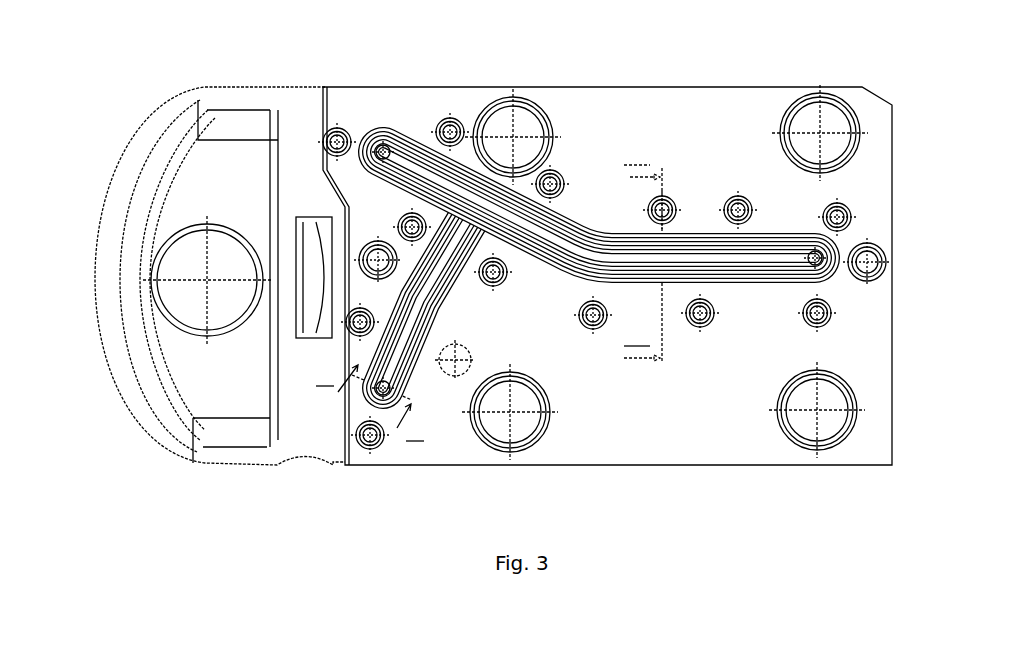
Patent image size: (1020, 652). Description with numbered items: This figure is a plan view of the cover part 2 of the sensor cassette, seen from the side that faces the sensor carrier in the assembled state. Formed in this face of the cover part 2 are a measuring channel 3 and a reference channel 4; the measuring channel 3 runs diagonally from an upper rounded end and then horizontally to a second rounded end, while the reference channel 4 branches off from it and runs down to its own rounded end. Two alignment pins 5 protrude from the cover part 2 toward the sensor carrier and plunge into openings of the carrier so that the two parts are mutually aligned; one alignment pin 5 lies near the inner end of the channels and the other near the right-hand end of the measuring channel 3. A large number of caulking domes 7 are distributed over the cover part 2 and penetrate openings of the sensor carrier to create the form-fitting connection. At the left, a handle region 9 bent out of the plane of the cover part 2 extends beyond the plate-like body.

The cover part 2 is at (718, 104).
The measuring channel 3 is at (740, 275).
The reference channel 4 is at (408, 398).
The alignment pin 5 is at (372, 252).
The caulking dome 7 is at (456, 118).
The handle region 9 is at (135, 192).